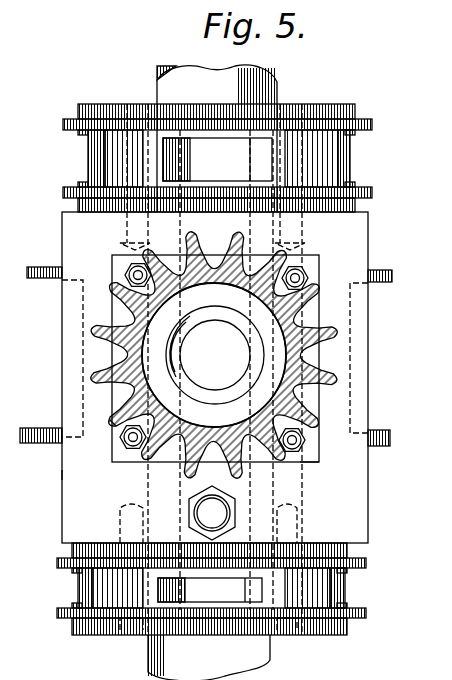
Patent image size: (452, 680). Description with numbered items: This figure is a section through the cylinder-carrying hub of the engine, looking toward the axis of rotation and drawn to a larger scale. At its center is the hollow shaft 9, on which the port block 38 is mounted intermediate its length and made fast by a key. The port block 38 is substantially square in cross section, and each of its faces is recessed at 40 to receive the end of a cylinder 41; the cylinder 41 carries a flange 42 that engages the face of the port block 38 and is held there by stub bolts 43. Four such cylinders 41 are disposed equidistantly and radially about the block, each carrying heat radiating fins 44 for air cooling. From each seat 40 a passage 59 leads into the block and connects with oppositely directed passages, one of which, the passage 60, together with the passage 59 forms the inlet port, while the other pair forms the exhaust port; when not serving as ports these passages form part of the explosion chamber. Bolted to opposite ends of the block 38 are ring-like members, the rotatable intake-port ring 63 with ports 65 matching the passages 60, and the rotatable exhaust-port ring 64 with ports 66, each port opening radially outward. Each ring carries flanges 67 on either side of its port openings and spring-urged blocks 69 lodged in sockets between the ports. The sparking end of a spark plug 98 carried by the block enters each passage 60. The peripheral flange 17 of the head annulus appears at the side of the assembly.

The hollow shaft 9 is at (212, 372).
The flange 17 is at (31, 473).
The port block 38 is at (215, 369).
The recess 40 is at (210, 368).
The cylinder 41 is at (242, 438).
The flange 42 is at (307, 463).
The stub bolts 43 is at (50, 278).
The heat radiating fins 44 is at (110, 421).
The passage 59 is at (238, 398).
The passage 60 is at (180, 215).
The rotatable intake-port ring 63 is at (302, 642).
The rotatable exhaust-port ring 64 is at (97, 107).
The passages or ports 65 is at (336, 173).
The passages or ports 66 is at (214, 180).
The flanges 67 is at (70, 186).
The blocks 69 is at (137, 168).
The spark plug 98 is at (201, 502).